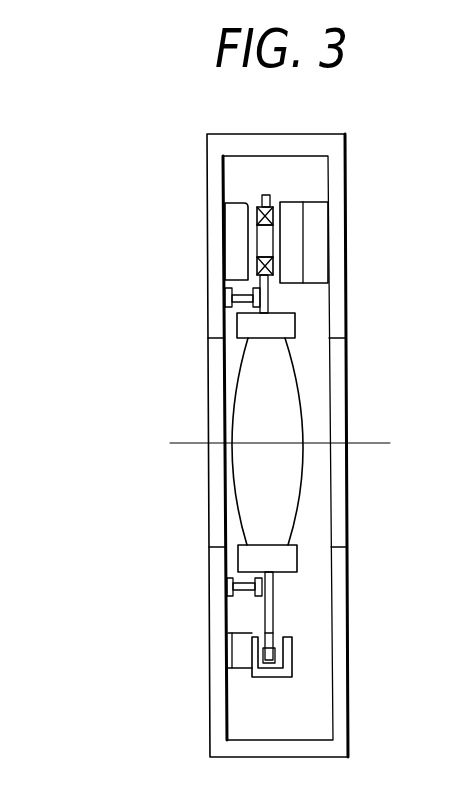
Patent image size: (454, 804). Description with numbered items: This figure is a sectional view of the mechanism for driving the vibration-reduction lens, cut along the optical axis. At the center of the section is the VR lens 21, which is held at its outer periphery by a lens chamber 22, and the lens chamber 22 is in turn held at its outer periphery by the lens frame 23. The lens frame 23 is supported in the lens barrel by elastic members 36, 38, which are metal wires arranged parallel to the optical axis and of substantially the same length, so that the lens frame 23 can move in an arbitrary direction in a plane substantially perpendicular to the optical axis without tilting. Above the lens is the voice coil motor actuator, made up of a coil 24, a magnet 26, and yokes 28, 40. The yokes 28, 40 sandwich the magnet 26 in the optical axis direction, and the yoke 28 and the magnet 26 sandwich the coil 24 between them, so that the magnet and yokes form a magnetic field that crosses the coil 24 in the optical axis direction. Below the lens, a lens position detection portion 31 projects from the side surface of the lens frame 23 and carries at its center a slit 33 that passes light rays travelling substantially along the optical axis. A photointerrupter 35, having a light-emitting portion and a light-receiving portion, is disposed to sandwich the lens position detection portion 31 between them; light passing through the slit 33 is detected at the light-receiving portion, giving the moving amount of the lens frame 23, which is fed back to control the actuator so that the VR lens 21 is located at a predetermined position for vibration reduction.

The VR lens 21 is at (243, 508).
The lens chamber 22 is at (247, 560).
The lens frame 23 is at (267, 606).
The coil 24 is at (272, 201).
The magnet 26 is at (297, 218).
The yoke 28 is at (230, 223).
The lens position detection portion 31 is at (272, 633).
The slit 33 is at (272, 650).
The photointerrupter 35 is at (284, 660).
The elastic member 36 is at (240, 301).
The elastic member 38 is at (247, 592).
The yoke 40 is at (317, 263).